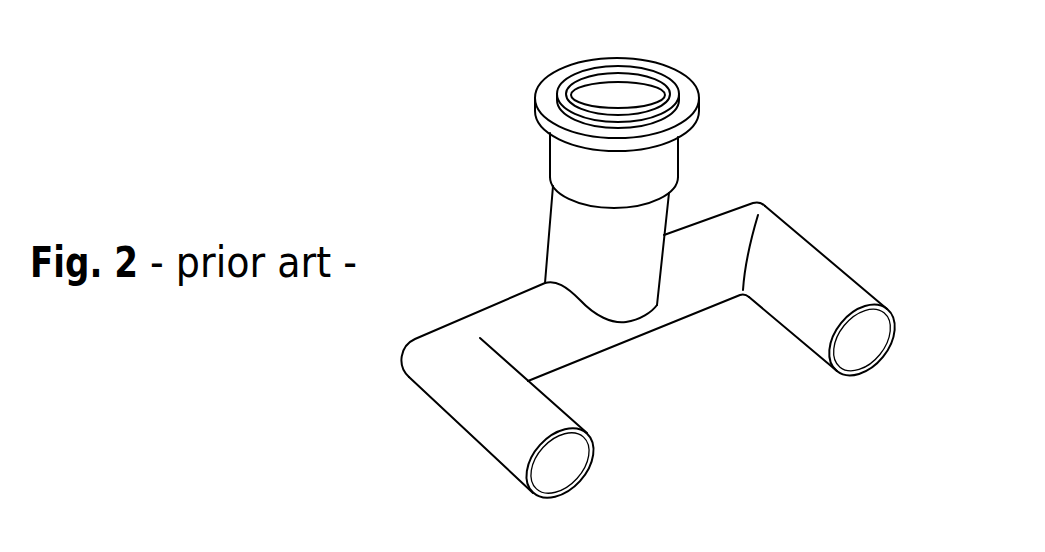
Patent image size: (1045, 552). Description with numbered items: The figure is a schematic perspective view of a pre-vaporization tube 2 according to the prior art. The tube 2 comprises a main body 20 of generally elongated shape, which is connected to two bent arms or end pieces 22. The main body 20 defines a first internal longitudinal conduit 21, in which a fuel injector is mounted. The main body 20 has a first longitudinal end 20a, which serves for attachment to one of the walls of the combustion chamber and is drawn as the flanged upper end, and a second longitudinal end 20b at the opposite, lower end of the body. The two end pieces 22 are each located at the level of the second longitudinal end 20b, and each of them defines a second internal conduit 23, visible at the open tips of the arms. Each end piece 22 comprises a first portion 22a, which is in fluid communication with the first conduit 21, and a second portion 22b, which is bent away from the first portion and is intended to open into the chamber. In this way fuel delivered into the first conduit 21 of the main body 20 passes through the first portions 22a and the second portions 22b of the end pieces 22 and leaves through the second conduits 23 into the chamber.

The tube 2 is at (462, 168).
The main body 20 is at (572, 222).
The first longitudinal end 20a is at (550, 97).
The first internal longitudinal conduit 21 is at (623, 98).
The second longitudinal end 20b is at (622, 287).
The bent arm or end piece 22 is at (620, 477).
The first portion 22a is at (513, 330).
The second portion 22b is at (495, 405).
The second internal conduit 23 is at (552, 466).